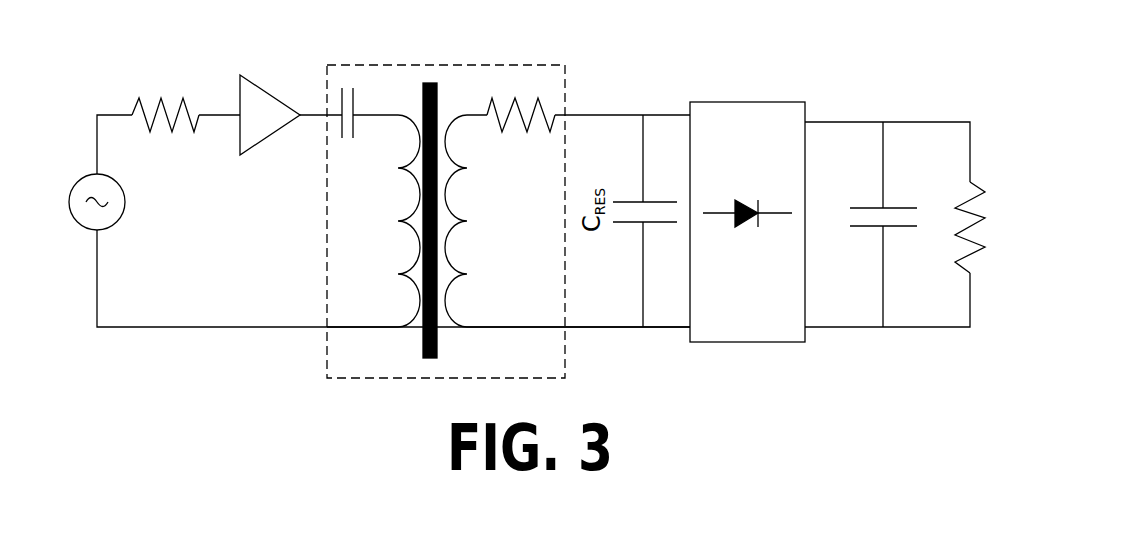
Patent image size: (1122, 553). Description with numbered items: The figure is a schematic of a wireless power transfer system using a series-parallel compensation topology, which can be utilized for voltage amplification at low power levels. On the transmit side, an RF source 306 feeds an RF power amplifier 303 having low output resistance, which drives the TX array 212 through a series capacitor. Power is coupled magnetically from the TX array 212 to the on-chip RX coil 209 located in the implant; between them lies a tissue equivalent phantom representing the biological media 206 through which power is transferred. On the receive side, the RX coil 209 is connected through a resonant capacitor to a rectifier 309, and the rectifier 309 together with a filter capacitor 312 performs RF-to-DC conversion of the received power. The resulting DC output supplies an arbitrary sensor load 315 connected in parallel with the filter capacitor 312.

The biological media 206 is at (438, 100).
The TX array 212 is at (373, 221).
The on-chip RX coil 209 is at (567, 212).
The RF power amplifier 303 is at (253, 147).
The RF source 306 is at (108, 228).
The rectifier 309 is at (747, 222).
The filter capacitor 312 is at (867, 224).
The sensor load 315 is at (954, 222).